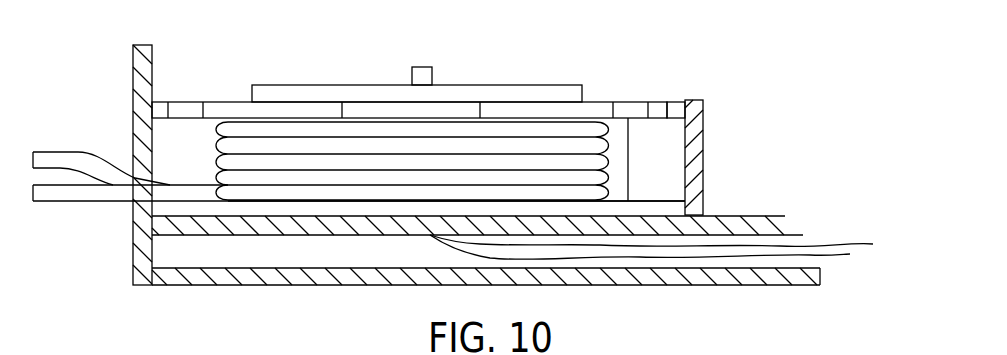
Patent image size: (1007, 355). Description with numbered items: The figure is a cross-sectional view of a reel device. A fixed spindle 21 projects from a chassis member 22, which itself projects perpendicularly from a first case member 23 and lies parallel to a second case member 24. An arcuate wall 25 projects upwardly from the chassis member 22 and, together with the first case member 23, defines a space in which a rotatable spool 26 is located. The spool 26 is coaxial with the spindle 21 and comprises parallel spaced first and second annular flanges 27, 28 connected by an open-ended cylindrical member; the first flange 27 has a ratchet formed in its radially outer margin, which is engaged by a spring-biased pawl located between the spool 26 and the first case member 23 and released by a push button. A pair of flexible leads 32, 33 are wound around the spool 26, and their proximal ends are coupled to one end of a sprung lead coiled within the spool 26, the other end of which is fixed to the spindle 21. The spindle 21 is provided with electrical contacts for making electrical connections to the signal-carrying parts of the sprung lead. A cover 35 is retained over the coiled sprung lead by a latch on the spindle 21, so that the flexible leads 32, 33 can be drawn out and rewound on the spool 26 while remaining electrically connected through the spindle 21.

The fixed spindle 21 is at (430, 67).
The chassis member 22 is at (322, 226).
The first case member 23 is at (143, 72).
The second case member 24 is at (270, 286).
The arcuate wall 25 is at (697, 148).
The rotatable spool 26 is at (602, 100).
The first annular flange 27 is at (677, 102).
The second annular flange 28 is at (673, 208).
The flexible lead 32 is at (66, 148).
The flexible lead 33 is at (90, 195).
The cover 35 is at (340, 93).